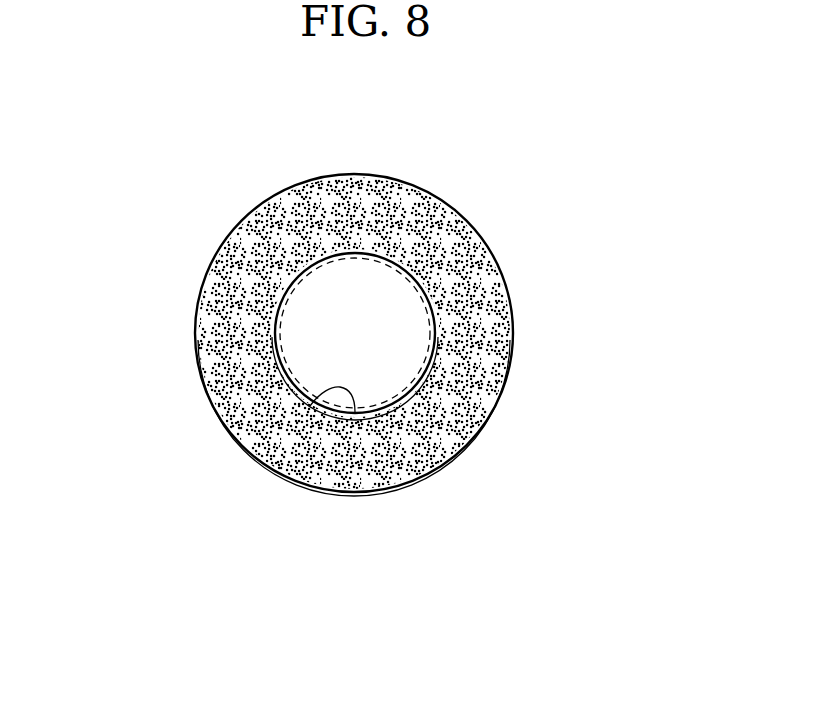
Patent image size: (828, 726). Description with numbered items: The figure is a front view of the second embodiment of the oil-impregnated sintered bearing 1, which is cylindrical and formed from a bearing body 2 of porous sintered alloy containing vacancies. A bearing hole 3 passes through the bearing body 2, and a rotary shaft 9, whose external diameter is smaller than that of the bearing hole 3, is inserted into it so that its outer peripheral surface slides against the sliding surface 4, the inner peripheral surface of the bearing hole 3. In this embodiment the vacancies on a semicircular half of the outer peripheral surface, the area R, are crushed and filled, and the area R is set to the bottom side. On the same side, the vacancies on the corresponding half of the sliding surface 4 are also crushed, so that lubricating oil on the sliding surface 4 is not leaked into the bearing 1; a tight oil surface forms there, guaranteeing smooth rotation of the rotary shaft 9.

The oil-impregnated sintered bearing 1 is at (490, 242).
The bearing body 2 is at (283, 237).
The bearing hole 3 is at (277, 313).
The sliding surface 4 is at (310, 406).
The rotary shaft 9 is at (383, 267).
The area R is at (428, 370).